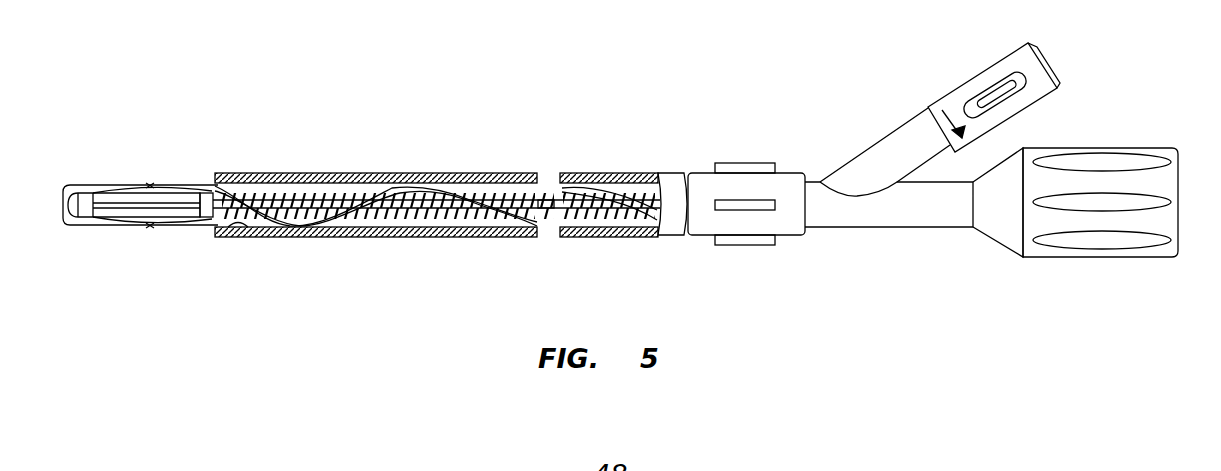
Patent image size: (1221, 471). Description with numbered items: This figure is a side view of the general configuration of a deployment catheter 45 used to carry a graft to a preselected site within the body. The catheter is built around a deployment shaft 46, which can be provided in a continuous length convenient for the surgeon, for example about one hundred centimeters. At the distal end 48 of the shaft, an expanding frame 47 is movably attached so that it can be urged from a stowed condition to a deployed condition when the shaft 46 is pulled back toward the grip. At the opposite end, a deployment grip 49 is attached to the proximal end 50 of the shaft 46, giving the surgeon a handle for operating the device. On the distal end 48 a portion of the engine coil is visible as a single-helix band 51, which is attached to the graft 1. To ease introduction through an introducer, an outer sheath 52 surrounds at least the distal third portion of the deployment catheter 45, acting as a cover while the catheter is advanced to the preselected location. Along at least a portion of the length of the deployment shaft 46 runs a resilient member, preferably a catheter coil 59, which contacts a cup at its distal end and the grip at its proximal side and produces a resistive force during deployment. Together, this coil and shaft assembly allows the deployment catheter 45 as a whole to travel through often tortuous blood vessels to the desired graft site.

The graft 1 is at (238, 232).
The deployment catheter 45 is at (611, 258).
The deployment shaft 46 is at (382, 212).
The expanding frame 47 is at (96, 230).
The distal end 48 is at (128, 212).
The deployment grip 49 is at (1003, 223).
The proximal end 50 is at (672, 183).
The single-helix band 51 is at (240, 173).
The outer sheath 52 is at (319, 173).
The catheter coil 59 is at (445, 212).